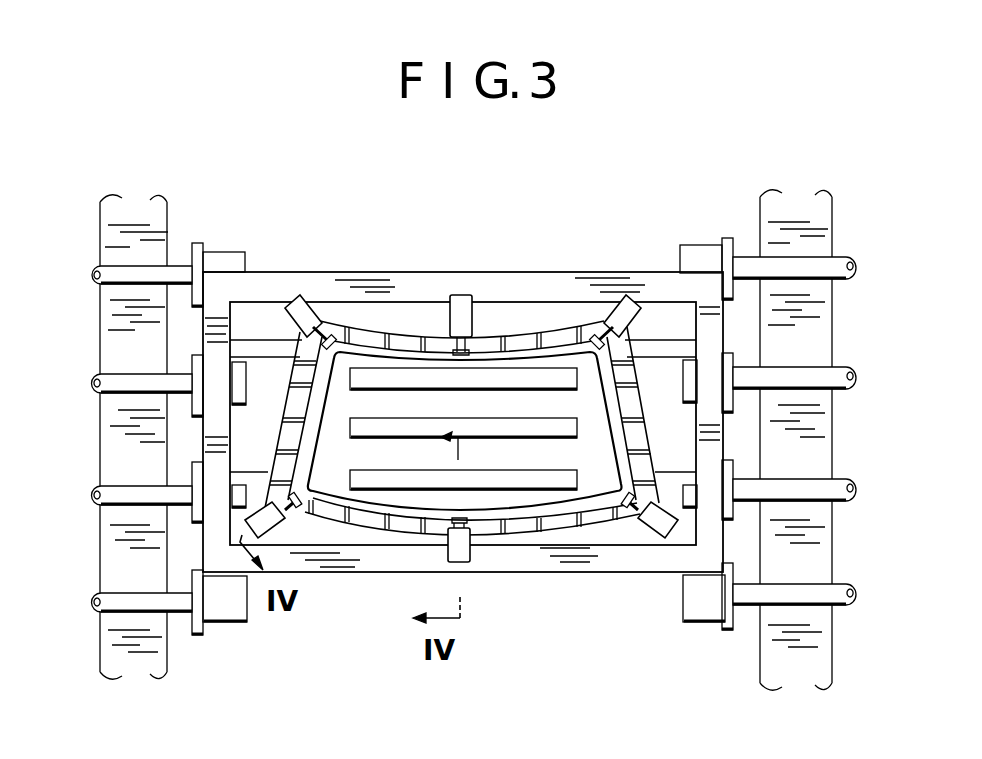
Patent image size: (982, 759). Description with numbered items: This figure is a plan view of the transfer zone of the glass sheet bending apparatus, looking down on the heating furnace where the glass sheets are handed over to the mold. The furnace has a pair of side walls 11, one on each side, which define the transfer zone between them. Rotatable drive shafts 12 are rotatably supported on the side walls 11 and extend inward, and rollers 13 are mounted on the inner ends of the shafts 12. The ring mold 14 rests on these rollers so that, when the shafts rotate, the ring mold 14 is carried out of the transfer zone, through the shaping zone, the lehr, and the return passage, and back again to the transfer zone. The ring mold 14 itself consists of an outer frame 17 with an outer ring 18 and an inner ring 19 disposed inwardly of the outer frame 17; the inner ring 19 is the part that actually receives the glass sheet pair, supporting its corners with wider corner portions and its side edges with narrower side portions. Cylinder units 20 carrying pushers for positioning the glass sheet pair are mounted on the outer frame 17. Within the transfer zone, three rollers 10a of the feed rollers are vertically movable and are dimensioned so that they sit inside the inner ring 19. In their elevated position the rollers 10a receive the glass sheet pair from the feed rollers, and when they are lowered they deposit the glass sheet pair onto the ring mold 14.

The vertically movable rollers 10a is at (596, 268).
The side walls 11 is at (158, 220).
The rotatable drive shafts 12 is at (794, 284).
The rollers 13 is at (224, 258).
The ring mold 14 is at (503, 272).
The outer frame 17 is at (420, 268).
The outer ring 18 is at (530, 325).
The inner ring 19 is at (398, 345).
The cylinder units 20 is at (458, 293).